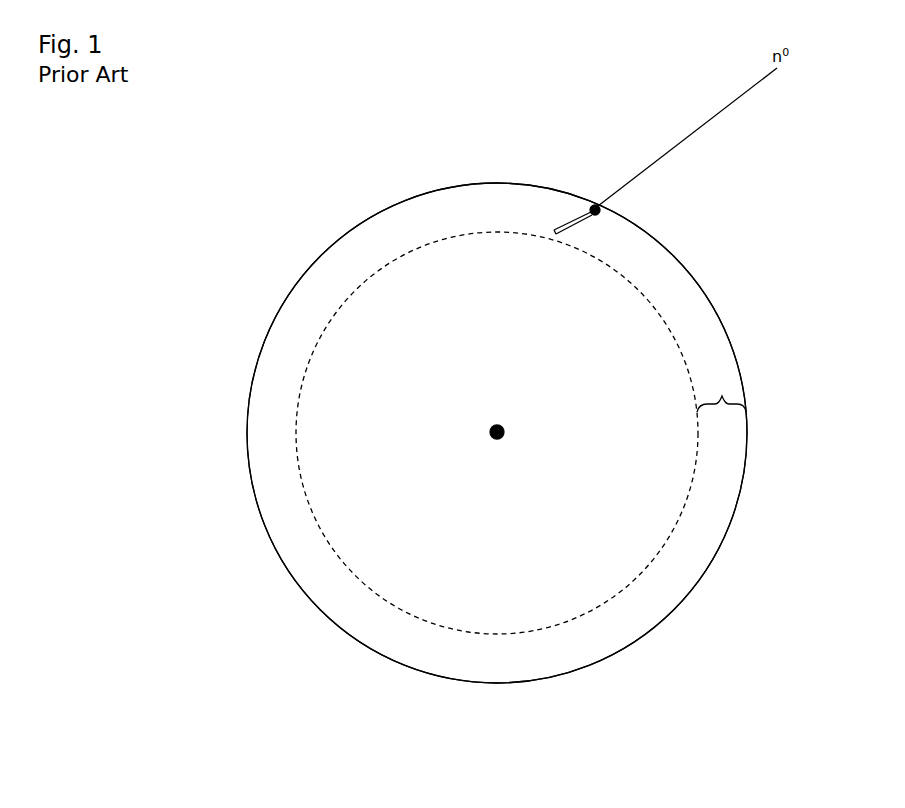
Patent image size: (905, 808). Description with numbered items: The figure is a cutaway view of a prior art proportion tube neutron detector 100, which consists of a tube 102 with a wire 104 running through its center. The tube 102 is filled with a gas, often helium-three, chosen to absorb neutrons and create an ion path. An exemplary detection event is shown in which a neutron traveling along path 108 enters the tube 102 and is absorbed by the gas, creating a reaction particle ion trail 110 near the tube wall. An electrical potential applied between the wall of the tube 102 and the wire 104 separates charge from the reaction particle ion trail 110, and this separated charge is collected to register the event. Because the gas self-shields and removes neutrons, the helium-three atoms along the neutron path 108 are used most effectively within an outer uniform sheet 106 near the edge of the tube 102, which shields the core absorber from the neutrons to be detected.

The prior art proportion tube neutron detector 100 is at (470, 80).
The tube 102 is at (280, 300).
The wire 104 is at (490, 434).
The uniform sheet 106 is at (722, 394).
The path 108 is at (687, 140).
The reaction particle ion trail 110 is at (574, 222).